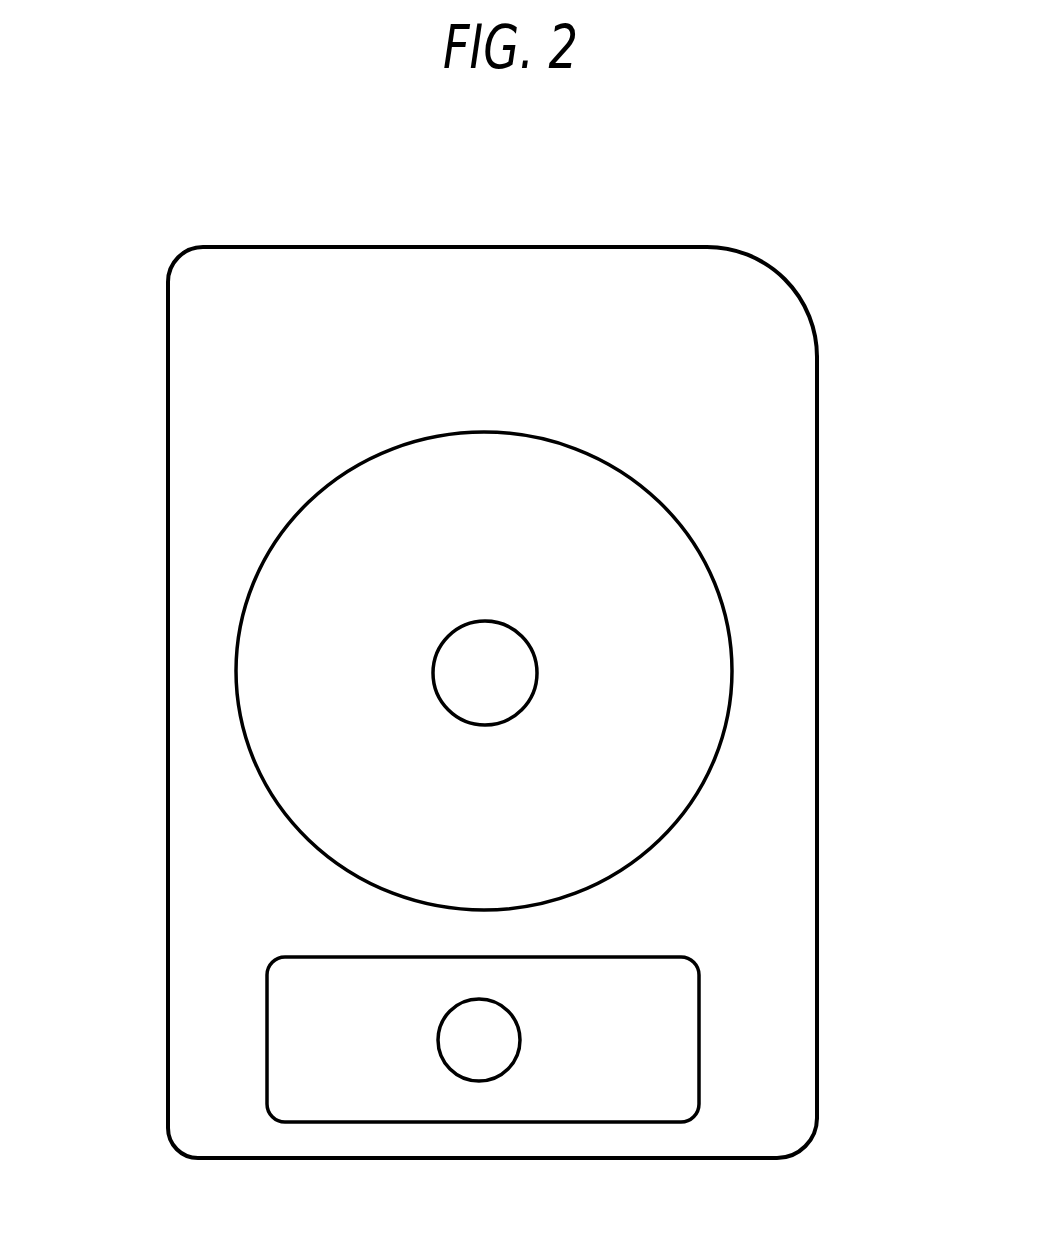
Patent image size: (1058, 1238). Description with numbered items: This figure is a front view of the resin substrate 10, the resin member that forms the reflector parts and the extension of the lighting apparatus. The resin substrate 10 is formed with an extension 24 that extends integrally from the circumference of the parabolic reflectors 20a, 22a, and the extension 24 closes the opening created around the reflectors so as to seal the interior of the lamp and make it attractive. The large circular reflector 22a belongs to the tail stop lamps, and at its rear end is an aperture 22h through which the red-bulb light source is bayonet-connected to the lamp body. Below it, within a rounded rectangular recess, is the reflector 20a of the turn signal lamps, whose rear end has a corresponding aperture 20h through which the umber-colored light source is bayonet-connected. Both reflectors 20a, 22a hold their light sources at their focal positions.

The resin substrate 10 is at (788, 274).
The extension 24 is at (777, 485).
The reflector part of the tail stop lamps 22a is at (697, 702).
The aperture 22h is at (511, 631).
The reflector part of the turn signal lamps 20a is at (678, 1053).
The aperture 20h is at (517, 1026).